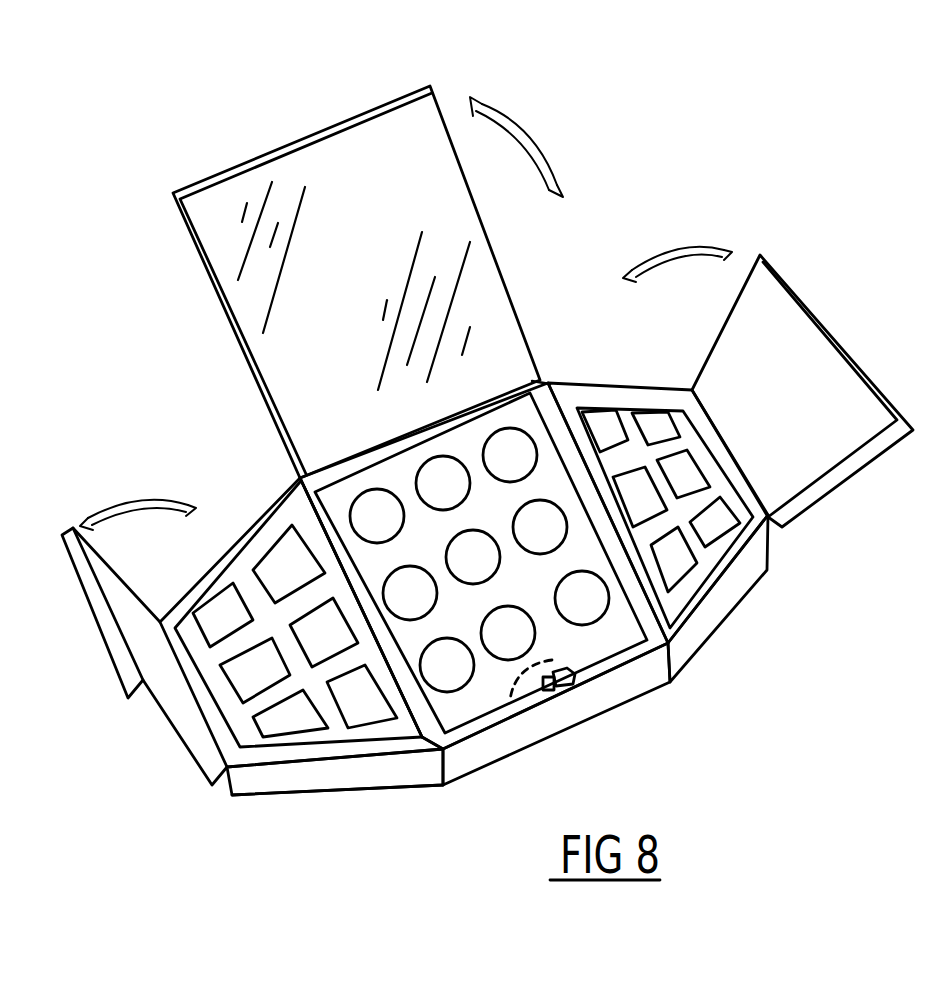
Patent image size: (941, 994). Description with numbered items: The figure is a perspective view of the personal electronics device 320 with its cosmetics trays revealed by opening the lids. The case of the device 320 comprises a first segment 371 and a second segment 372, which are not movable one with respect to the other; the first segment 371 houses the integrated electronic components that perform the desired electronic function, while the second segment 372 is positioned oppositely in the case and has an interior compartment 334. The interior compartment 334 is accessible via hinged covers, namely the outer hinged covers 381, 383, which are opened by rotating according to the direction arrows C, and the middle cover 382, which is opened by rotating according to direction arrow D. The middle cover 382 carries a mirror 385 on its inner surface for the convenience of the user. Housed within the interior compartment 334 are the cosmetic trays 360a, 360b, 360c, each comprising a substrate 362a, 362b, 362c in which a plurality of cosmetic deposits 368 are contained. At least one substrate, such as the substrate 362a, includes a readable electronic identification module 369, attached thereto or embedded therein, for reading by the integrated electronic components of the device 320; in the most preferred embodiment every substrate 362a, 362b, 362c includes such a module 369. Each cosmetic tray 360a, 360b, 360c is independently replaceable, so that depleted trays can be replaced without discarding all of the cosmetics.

The personal electronics device 320 is at (151, 340).
The interior compartment 334 is at (540, 390).
The cosmetic tray 360a is at (556, 622).
The cosmetic tray 360b is at (281, 678).
The cosmetic tray 360c is at (714, 532).
The substrate 362a is at (485, 692).
The substrate 362b is at (243, 583).
The substrate 362c is at (703, 557).
The cosmetic deposits 368 is at (447, 668).
The readable electronic identification module 369 is at (577, 688).
The first segment 371 is at (252, 800).
The second segment 372 is at (270, 512).
The outer hinged cover 381 is at (153, 722).
The middle cover 382 is at (177, 215).
The outer hinged cover 383 is at (805, 290).
The mirror 385 is at (333, 183).